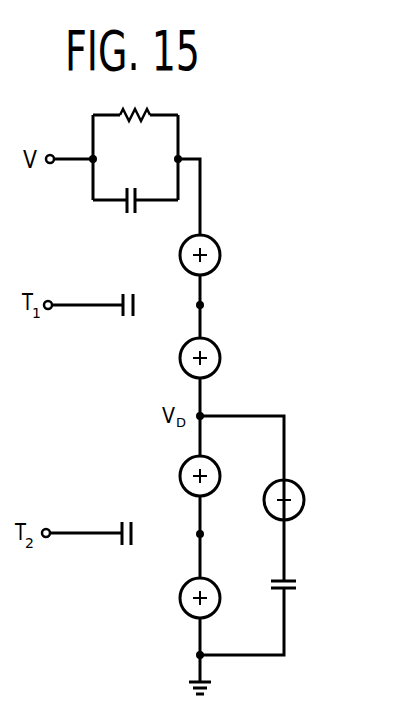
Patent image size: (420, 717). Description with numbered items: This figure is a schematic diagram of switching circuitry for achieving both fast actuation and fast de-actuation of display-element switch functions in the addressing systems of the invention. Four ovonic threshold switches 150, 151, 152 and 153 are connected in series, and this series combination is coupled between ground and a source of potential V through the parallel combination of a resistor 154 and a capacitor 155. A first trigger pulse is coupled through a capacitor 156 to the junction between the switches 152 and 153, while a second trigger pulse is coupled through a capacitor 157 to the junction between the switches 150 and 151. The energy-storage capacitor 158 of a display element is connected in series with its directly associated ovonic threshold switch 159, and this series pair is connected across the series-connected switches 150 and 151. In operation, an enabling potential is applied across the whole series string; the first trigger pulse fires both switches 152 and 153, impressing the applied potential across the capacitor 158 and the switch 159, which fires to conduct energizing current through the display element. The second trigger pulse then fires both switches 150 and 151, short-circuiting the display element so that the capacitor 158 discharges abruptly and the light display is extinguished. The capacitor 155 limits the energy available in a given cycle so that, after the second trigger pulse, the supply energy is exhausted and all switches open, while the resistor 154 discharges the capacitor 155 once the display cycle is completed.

The ovonic threshold switch 150 is at (179, 603).
The ovonic threshold switch 151 is at (179, 470).
The ovonic threshold switch 152 is at (215, 372).
The ovonic threshold switch 153 is at (220, 250).
The resistor 154 is at (134, 113).
The capacitor 155 is at (126, 206).
The capacitor 156 is at (122, 316).
The capacitor 157 is at (120, 543).
The energy-storage capacitor 158 is at (278, 590).
The ovonic threshold switch 159 is at (270, 514).